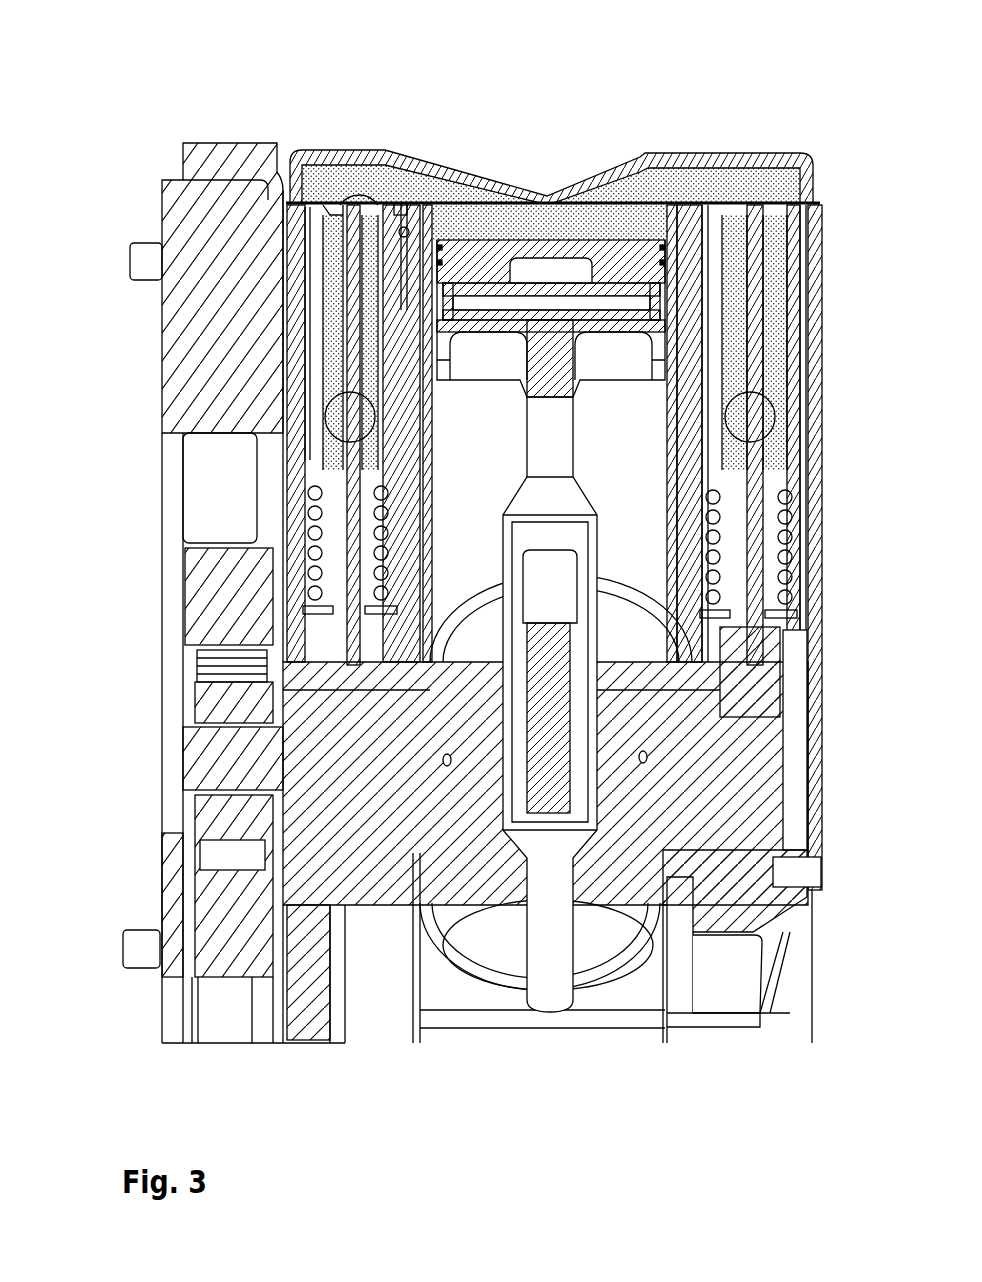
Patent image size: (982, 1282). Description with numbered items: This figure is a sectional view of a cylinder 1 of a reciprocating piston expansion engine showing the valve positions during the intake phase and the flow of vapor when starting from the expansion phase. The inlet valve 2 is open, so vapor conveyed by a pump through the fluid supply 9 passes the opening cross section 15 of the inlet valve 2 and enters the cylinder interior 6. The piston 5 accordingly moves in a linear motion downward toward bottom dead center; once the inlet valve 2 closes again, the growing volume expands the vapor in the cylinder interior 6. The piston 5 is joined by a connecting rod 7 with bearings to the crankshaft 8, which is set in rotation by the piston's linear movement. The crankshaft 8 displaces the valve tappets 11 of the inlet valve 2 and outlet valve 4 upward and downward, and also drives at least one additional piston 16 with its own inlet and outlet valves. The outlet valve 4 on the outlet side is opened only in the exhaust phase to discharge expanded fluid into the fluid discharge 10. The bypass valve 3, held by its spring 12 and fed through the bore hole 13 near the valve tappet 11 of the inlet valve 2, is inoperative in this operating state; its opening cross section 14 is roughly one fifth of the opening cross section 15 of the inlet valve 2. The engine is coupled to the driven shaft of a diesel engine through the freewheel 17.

The cylinder 1 is at (588, 158).
The inlet valve 2 is at (345, 200).
The bypass valve 3 is at (413, 207).
The outlet valve 4 is at (750, 220).
The piston 5 is at (613, 257).
The cylinder interior 6 is at (497, 218).
The connecting rod 7 is at (570, 500).
The crankshaft 8 is at (400, 733).
The fluid supply 9 is at (328, 372).
The fluid discharge 10 is at (768, 293).
The valve tappet 11 is at (333, 210).
The spring 12 is at (407, 207).
The bore hole 13 is at (380, 303).
The opening cross section of the bypass valve 14 is at (402, 200).
The opening cross section of the inlet valve 15 is at (340, 213).
The additional piston 16 is at (540, 1027).
The freewheel 17 is at (193, 683).